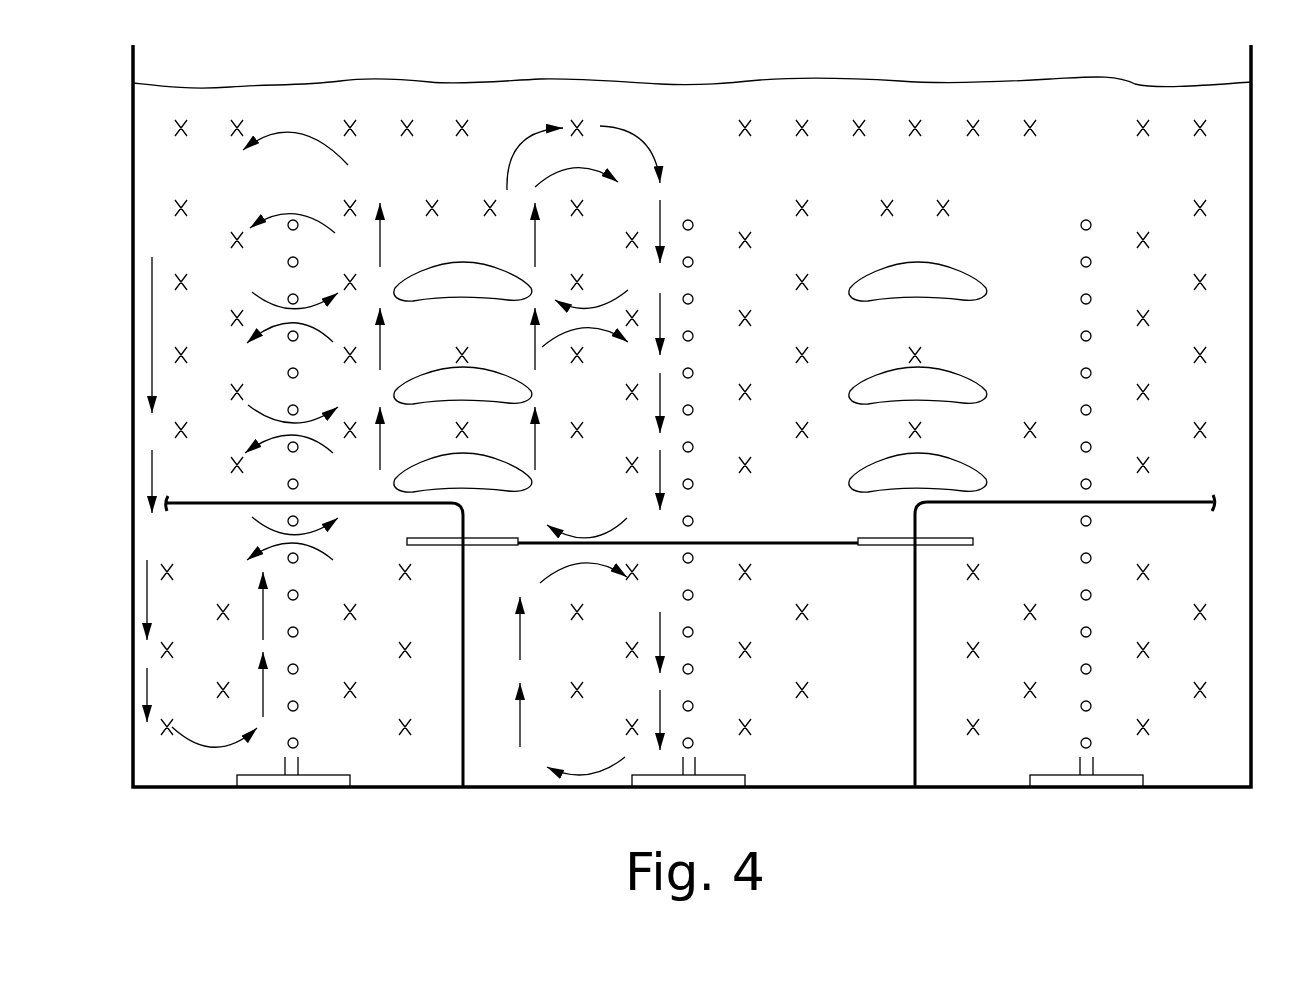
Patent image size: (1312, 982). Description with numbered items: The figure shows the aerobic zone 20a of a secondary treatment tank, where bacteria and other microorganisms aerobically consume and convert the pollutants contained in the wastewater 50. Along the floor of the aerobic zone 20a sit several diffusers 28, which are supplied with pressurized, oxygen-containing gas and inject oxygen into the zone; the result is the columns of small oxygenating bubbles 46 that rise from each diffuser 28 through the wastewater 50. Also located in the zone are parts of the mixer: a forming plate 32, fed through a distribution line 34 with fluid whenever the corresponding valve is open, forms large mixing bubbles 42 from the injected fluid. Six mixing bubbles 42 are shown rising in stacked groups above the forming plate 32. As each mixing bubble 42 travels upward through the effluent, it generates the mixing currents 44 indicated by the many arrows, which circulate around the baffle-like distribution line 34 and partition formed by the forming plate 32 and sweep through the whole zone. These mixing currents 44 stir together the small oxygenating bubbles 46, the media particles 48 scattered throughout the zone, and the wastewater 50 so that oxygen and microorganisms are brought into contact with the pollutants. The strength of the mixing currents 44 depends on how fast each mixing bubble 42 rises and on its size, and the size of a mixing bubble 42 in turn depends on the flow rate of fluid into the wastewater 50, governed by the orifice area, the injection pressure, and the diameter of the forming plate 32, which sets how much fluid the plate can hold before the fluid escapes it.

The aerobic zone 20a is at (1270, 188).
The wastewater 50 is at (1122, 78).
The distribution line 34 is at (237, 504).
The forming plate 32 is at (427, 546).
The mixing bubble 42 is at (463, 262).
The diffuser 28 is at (292, 790).
The oxygenating bubbles 46 is at (300, 745).
The media particles 48 is at (352, 124).
The mixing currents 44 is at (288, 133).